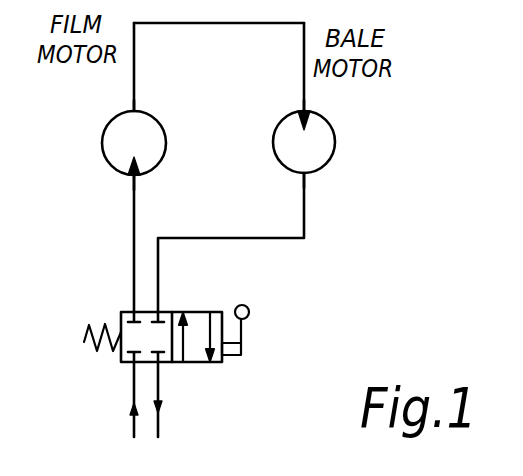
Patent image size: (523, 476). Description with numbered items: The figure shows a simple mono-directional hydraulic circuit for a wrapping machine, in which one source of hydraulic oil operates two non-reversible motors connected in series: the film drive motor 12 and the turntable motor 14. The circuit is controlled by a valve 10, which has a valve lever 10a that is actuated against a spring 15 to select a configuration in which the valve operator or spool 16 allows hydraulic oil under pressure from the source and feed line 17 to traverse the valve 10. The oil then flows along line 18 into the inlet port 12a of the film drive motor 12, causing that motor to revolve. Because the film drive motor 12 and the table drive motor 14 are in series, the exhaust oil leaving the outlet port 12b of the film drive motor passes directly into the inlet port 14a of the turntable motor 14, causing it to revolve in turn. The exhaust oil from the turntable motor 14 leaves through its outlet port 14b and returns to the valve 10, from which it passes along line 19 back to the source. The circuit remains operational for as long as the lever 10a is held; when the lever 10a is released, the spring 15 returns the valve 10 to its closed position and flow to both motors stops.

The valve 10 is at (197, 363).
The valve lever 10a is at (249, 315).
The film drive motor 12 is at (112, 119).
The inlet port 12a is at (140, 177).
The outlet port 12b is at (138, 108).
The turntable motor 14 is at (335, 130).
The inlet port 14a is at (302, 112).
The outlet port 14b is at (302, 175).
The spring 15 is at (84, 342).
The valve operator or spool 16 is at (202, 312).
The feed line 17 is at (133, 427).
The line 18 is at (133, 217).
The line 19 is at (160, 427).